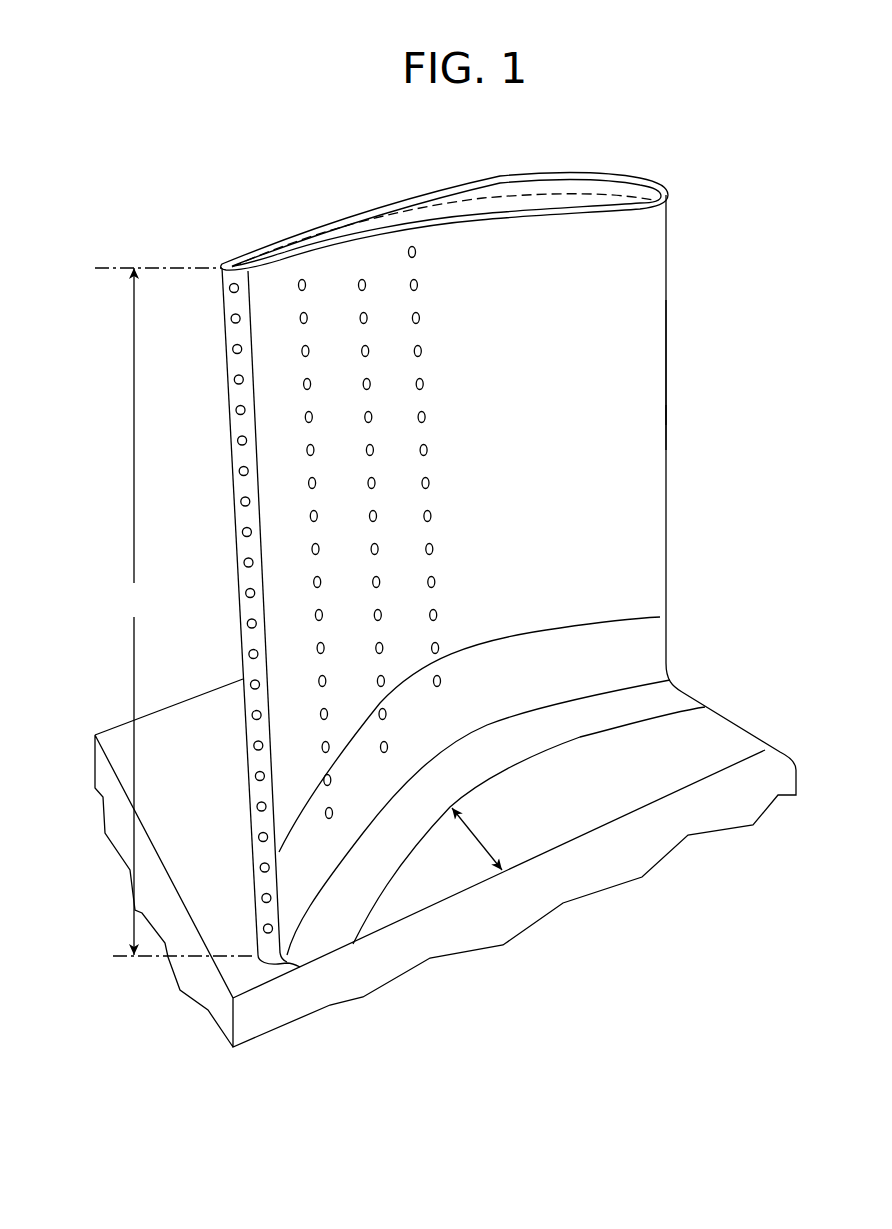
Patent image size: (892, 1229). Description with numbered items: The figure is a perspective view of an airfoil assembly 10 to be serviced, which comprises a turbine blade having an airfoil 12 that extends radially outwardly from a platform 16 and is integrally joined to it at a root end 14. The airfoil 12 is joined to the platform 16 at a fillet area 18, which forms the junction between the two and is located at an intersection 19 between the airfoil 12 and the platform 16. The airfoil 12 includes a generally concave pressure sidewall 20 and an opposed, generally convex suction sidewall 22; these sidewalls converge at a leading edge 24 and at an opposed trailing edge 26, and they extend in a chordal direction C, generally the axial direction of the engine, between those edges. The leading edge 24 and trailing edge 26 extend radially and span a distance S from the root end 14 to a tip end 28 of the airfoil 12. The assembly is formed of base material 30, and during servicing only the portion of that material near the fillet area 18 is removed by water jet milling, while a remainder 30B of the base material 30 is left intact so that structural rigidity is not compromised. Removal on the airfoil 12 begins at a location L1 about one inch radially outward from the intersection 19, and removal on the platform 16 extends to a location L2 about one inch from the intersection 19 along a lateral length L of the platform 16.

The airfoil assembly 10 is at (450, 595).
The airfoil 12 is at (462, 595).
The root end 14 is at (648, 653).
The platform 16 is at (743, 721).
The fillet area 18 is at (304, 929).
The intersection 19 is at (487, 725).
The pressure sidewall 20 is at (620, 377).
The suction sidewall 22 is at (444, 193).
The leading edge 24 is at (667, 246).
The trailing edge 26 is at (242, 457).
The tip end 28 is at (297, 232).
The base material 30 is at (649, 514).
The remainder of the base material 30B is at (643, 414).
The chordal direction C is at (463, 200).
The lateral length L is at (480, 835).
The location L1 is at (570, 628).
The location L2 is at (597, 728).
The span distance S is at (175, 612).